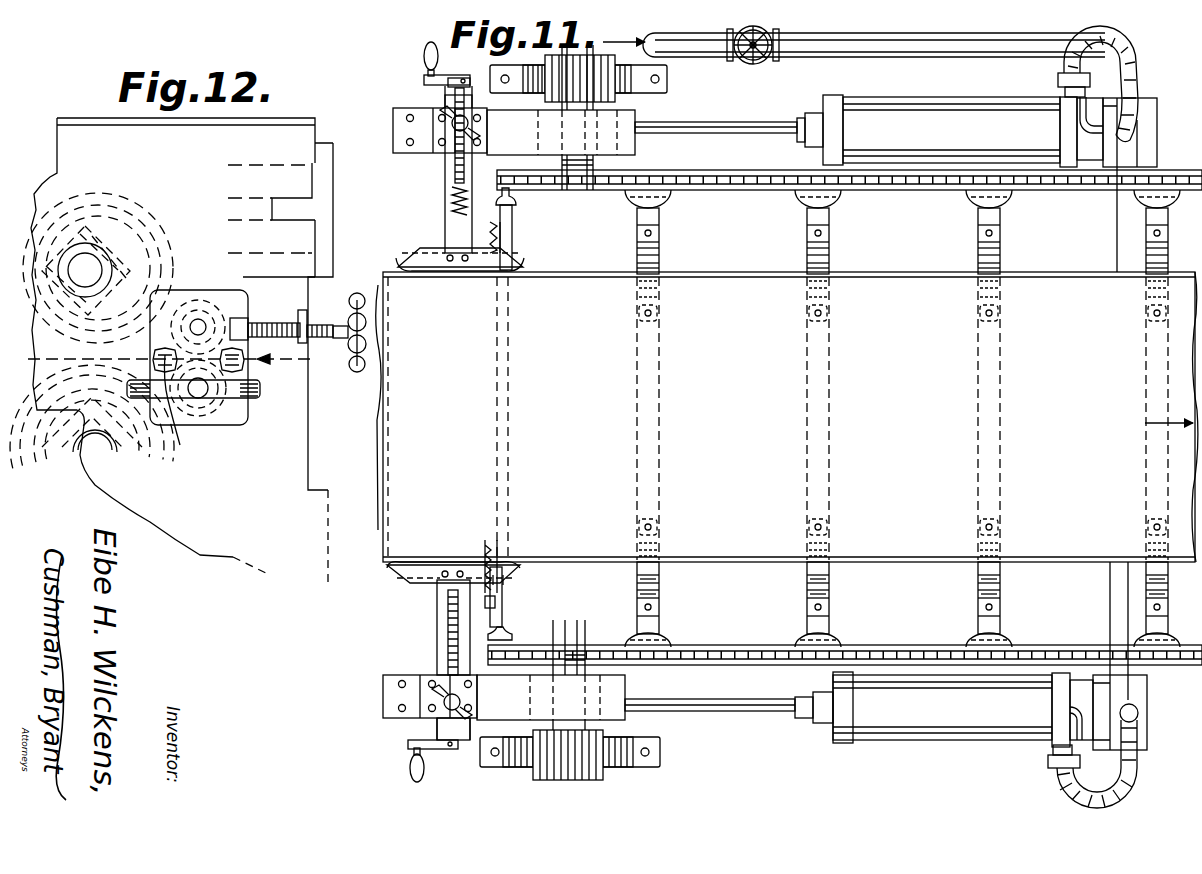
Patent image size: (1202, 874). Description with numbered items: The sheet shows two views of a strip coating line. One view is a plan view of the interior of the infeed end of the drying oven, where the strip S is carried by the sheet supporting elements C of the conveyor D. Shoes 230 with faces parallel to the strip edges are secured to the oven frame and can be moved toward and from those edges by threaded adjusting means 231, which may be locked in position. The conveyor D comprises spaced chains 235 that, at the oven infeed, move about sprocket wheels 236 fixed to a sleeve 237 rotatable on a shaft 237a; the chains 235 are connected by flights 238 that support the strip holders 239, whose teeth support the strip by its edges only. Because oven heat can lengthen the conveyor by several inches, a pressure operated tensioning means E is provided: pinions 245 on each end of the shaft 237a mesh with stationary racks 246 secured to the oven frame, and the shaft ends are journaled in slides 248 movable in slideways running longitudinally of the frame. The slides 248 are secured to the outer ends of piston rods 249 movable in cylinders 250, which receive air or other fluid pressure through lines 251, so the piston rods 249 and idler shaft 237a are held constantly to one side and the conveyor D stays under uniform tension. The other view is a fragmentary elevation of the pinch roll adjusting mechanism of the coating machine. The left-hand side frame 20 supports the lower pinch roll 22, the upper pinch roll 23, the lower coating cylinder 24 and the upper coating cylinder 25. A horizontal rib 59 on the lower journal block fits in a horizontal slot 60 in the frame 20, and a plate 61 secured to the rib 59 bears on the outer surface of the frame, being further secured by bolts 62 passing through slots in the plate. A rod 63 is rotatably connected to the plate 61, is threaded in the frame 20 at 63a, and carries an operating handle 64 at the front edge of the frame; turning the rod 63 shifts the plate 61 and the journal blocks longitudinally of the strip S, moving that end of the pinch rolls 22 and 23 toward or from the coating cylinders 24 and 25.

In FIG. 12, the supporting side frame 20 is at (200, 530).
In FIG. 12, the lower pinch roll 22 is at (233, 427).
In FIG. 12, the upper pinch roll 23 is at (192, 307).
In FIG. 12, the lower coating cylinder 24 is at (157, 480).
In FIG. 12, the upper coating cylinder 25 is at (152, 216).
In FIG. 12, the horizontal rib 59 is at (248, 410).
In FIG. 12, the horizontal slot 60 is at (250, 380).
In FIG. 12, the plate 61 is at (250, 303).
In FIG. 12, the bolts 62 is at (182, 411).
In FIG. 12, the rod 63 is at (296, 335).
In FIG. 12, the threaded portion of rod 63a is at (320, 343).
In FIG. 12, the operating handle 64 is at (350, 313).
In FIG. 11, the shoes 230 is at (392, 570).
In FIG. 11, the threaded adjusting means 231 is at (445, 90).
In FIG. 11, the conveyor chains 235 is at (712, 175).
In FIG. 11, the sprocket wheels 236 is at (575, 190).
In FIG. 11, the sleeve 237 is at (540, 238).
In FIG. 11, the shaft 237a is at (563, 725).
In FIG. 11, the flights 238 is at (497, 602).
In FIG. 11, the strip holders 239 is at (493, 575).
In FIG. 11, the pinions 245 is at (610, 97).
In FIG. 11, the stationary racks 246 is at (667, 78).
In FIG. 11, the slides 248 is at (620, 146).
In FIG. 11, the piston rods 249 is at (760, 120).
In FIG. 11, the cylinders 250 is at (1010, 88).
In FIG. 11, the lines 251 is at (1143, 78).
In FIG. 11, the sheet supporting elements C is at (664, 253).
In FIG. 11, the conveyor chain D is at (732, 191).
In FIG. 11, the pressure operated conveyor tensioning means E is at (893, 95).
In FIG. 11, the strip S is at (768, 290).